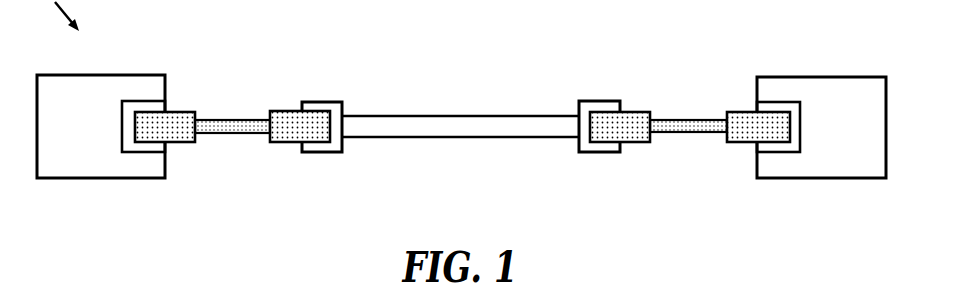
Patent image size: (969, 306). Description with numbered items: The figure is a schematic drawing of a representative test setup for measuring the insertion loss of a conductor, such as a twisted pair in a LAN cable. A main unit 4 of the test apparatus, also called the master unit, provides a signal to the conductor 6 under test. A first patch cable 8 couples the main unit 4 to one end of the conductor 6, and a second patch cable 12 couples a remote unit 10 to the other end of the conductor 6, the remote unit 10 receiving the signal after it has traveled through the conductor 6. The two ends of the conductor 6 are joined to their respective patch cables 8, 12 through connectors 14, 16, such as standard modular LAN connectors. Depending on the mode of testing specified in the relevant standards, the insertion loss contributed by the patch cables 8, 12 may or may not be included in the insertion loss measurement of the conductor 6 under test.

The main unit 4 is at (102, 78).
The conductor under test 6 is at (452, 121).
The first patch cable 8 is at (230, 120).
The remote unit 10 is at (822, 80).
The second patch cable 12 is at (688, 122).
The connector 14 is at (320, 147).
The connector 16 is at (598, 148).